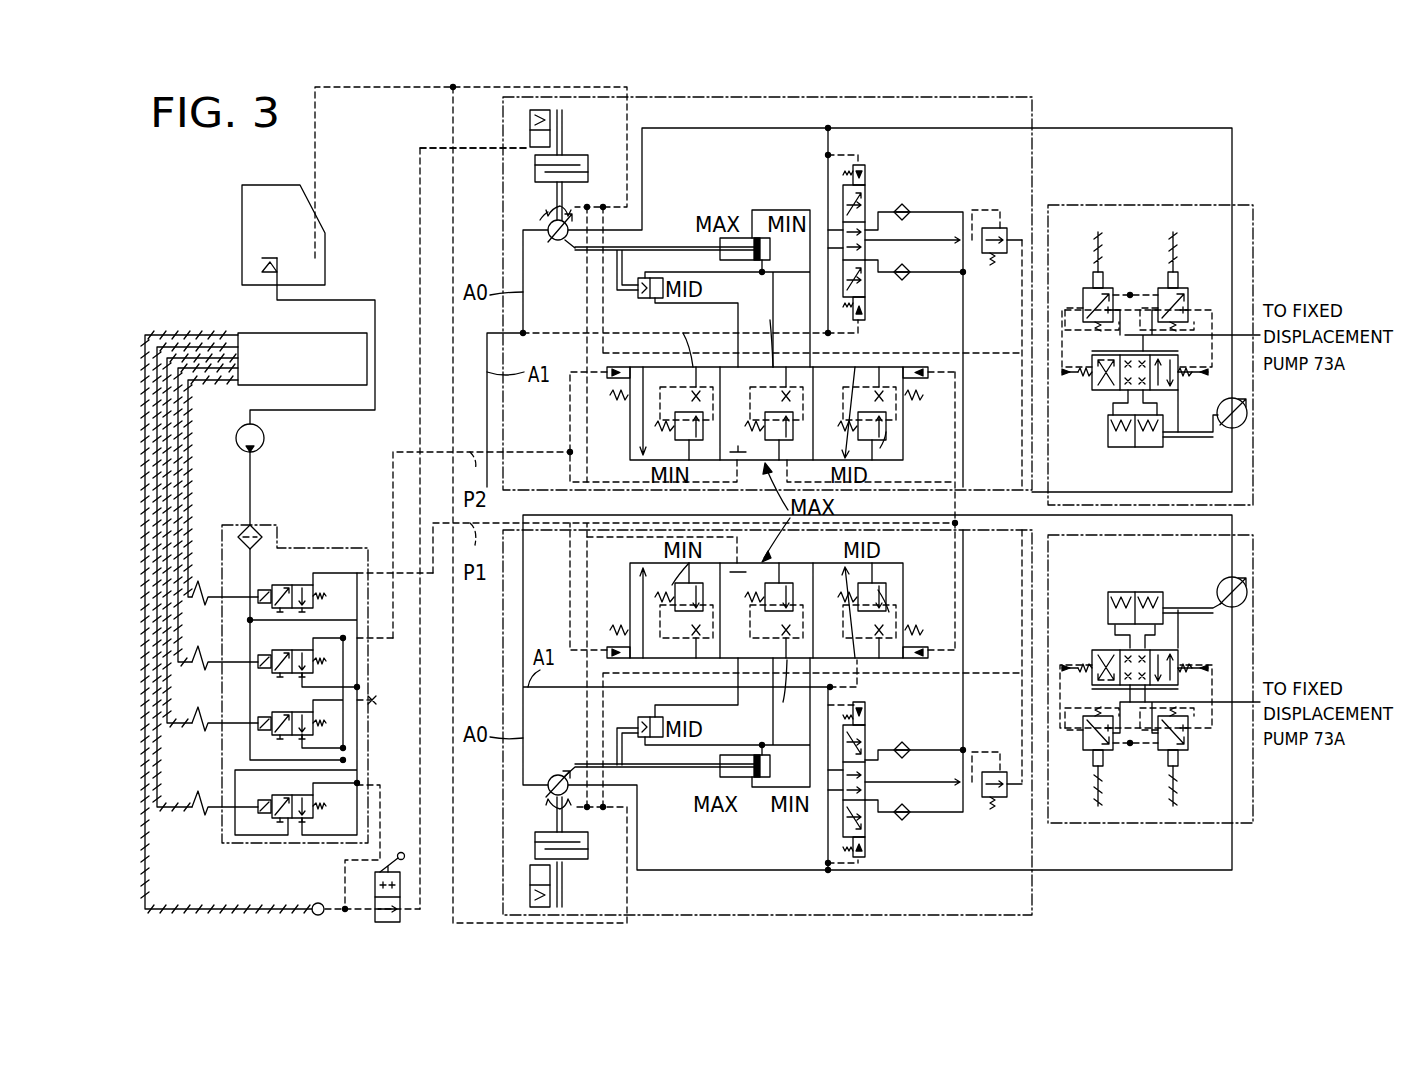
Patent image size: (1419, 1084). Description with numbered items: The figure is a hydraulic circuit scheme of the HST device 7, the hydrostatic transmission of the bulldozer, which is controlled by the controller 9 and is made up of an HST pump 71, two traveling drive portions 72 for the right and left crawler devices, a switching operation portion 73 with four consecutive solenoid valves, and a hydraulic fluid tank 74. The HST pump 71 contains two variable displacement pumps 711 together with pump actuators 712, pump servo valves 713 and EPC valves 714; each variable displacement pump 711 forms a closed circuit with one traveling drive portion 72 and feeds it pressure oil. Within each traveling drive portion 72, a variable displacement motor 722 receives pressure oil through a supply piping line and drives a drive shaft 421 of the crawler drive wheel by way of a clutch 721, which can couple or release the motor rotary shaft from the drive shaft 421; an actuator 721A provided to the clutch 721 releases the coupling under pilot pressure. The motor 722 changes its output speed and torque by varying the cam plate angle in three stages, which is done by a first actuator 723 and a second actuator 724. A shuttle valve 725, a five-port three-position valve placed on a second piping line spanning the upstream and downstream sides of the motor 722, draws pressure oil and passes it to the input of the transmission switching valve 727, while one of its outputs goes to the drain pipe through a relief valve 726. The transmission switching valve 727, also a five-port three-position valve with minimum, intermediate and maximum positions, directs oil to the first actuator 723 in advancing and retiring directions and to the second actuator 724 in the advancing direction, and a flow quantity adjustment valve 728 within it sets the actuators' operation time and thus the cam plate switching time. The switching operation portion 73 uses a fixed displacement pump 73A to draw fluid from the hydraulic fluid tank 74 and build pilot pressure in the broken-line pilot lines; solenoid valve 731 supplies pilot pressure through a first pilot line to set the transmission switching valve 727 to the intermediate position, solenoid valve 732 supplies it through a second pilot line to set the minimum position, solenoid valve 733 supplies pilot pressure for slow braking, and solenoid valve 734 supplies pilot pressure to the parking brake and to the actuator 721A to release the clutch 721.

The HST device 7 is at (176, 212).
The hydraulic fluid tank 74 is at (283, 185).
The controller 9 is at (258, 333).
The fixed displacement pump 73A is at (264, 438).
The switching operation portion 73 is at (322, 548).
The solenoid valve 731 is at (275, 585).
The solenoid valve 732 is at (263, 675).
The solenoid valve 733 is at (263, 736).
The solenoid valve 734 is at (296, 822).
The actuator 721A is at (530, 128).
The drive shaft 421 is at (560, 133).
The clutch 721 is at (588, 170).
The variable displacement motor 722 is at (556, 241).
The first actuator 723 is at (745, 238).
The second actuator 724 is at (652, 300).
The shuttle valve 725 is at (865, 283).
The relief valve 726 is at (1000, 256).
The transmission switching valve 727 is at (903, 412).
The flow quantity adjustment valve 728 is at (913, 570).
The traveling drive portion 72 is at (1042, 112).
The HST pump 71 is at (1093, 205).
The variable displacement pump 711 is at (1248, 414).
The pump actuator 712 is at (1150, 447).
The pump servo valve 713 is at (1090, 390).
The EPC valve 714 is at (1083, 300).